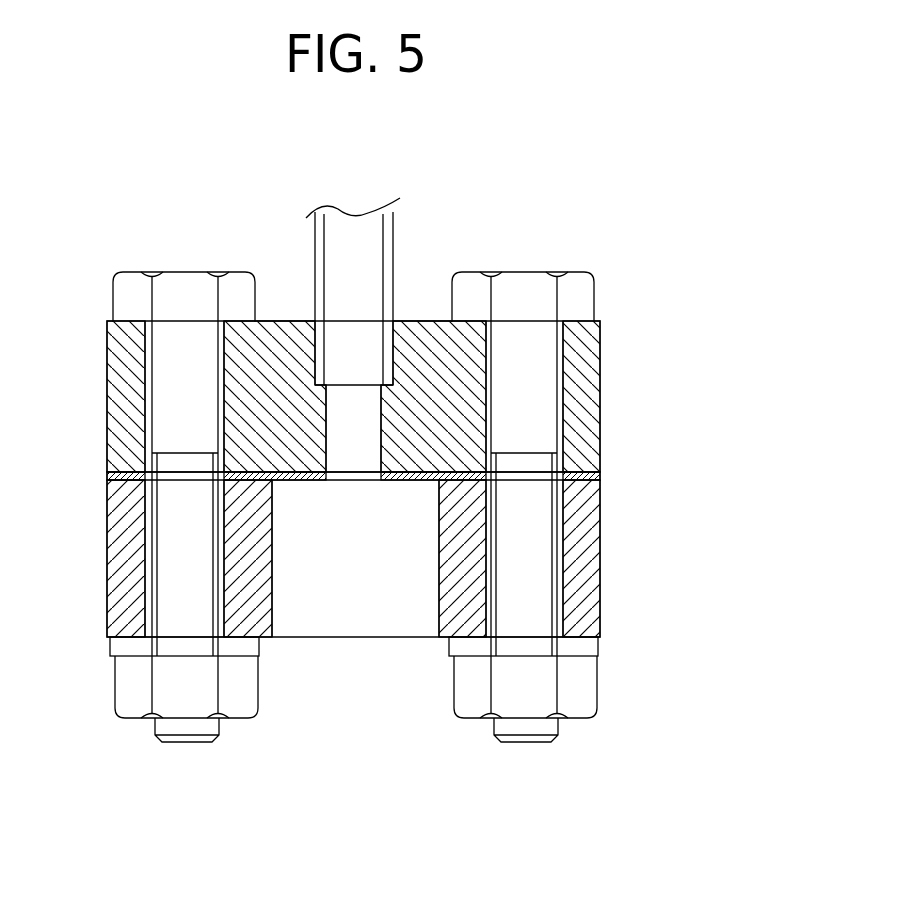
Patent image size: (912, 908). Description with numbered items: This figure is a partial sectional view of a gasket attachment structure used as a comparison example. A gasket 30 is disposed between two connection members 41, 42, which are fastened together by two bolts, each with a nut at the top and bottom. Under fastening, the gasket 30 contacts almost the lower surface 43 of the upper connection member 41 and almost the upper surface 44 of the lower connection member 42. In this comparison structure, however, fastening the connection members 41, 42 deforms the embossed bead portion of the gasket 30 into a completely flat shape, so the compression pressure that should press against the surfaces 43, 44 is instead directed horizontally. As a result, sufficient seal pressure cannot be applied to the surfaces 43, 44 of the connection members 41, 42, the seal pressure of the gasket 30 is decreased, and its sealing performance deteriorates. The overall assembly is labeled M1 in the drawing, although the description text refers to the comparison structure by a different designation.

The mold assembly M1 is at (580, 220).
The connection member 41 is at (585, 394).
The connection member 42 is at (590, 564).
The gasket 30 is at (600, 472).
The lower surface 43 is at (128, 483).
The upper surface 44 is at (248, 472).